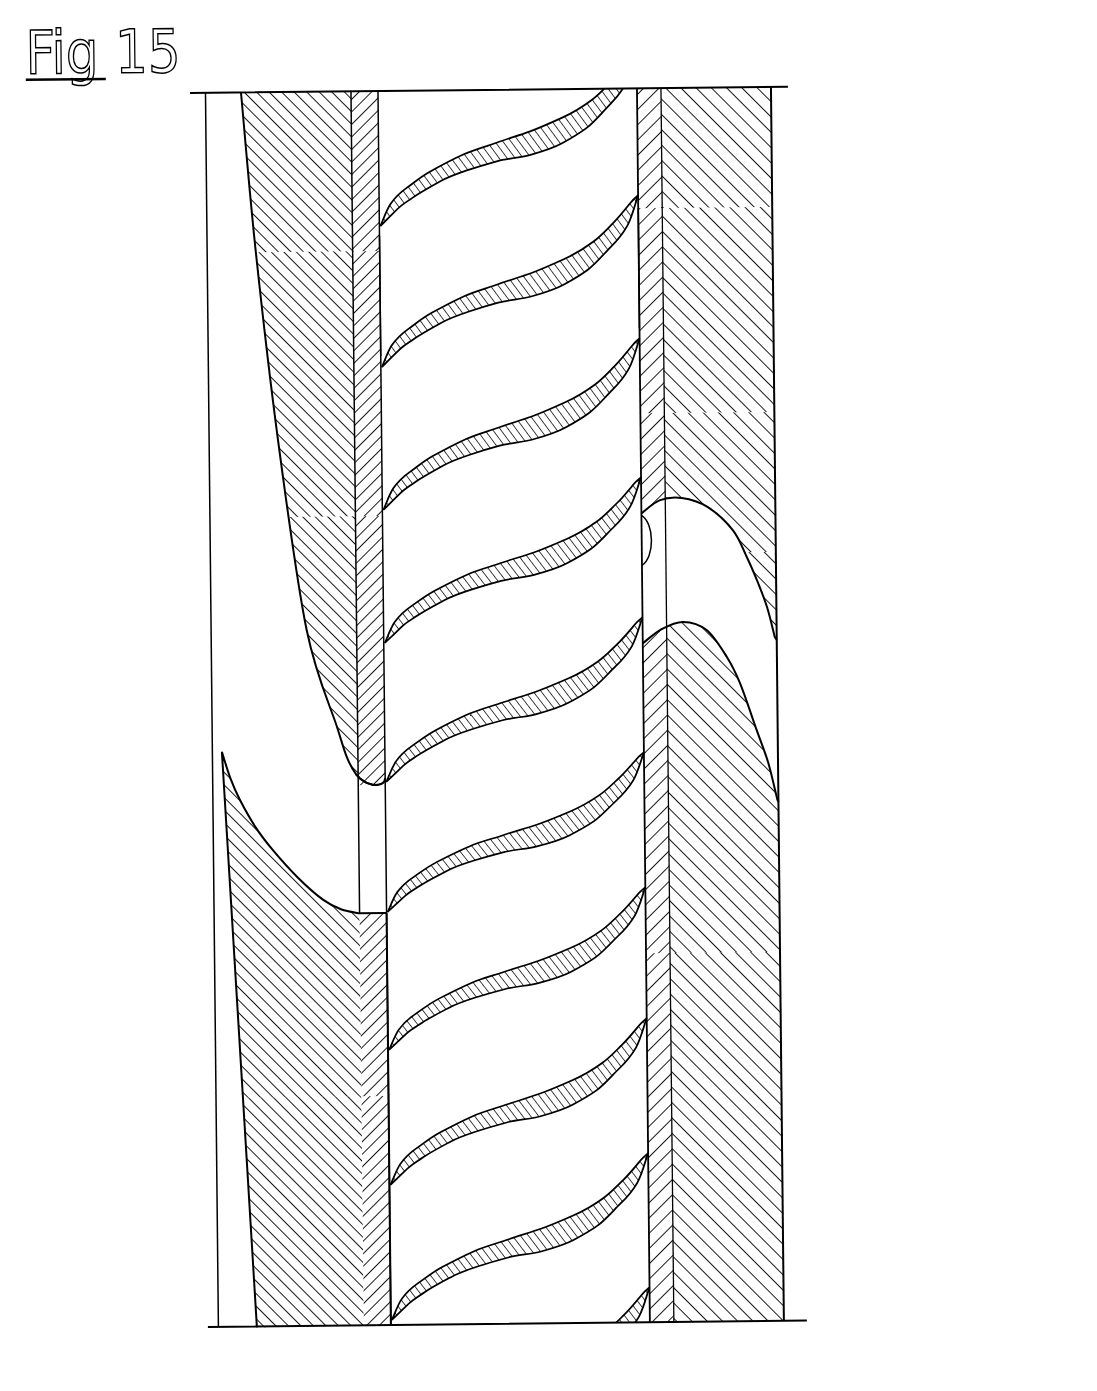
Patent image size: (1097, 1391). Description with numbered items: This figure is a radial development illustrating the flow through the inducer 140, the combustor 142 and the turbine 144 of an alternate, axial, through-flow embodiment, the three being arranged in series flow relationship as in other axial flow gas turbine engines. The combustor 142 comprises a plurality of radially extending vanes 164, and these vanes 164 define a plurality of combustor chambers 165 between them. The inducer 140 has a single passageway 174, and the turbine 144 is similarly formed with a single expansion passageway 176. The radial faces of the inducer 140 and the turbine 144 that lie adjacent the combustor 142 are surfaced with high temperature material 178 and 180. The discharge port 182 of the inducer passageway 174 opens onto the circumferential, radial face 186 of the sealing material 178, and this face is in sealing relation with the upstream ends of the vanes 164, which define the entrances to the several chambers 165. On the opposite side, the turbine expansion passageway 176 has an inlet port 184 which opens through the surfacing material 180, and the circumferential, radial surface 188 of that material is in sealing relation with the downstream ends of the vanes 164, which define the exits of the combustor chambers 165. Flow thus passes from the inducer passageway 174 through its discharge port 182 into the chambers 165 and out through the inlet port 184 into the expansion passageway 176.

The inducer 140 is at (171, 438).
The combustor 142 is at (522, 120).
The turbine 144 is at (796, 302).
The vanes 164 is at (597, 523).
The combustor chambers 165 is at (503, 709).
The inducer passageway 174 is at (280, 751).
The expansion passageway 176 is at (715, 590).
The high temperature material 178 is at (365, 95).
The high temperature material 180 is at (651, 96).
The discharge port 182 is at (377, 788).
The inlet port 184 is at (634, 616).
The circumferential radial face 186 is at (379, 294).
The circumferential radial surface 188 is at (634, 300).